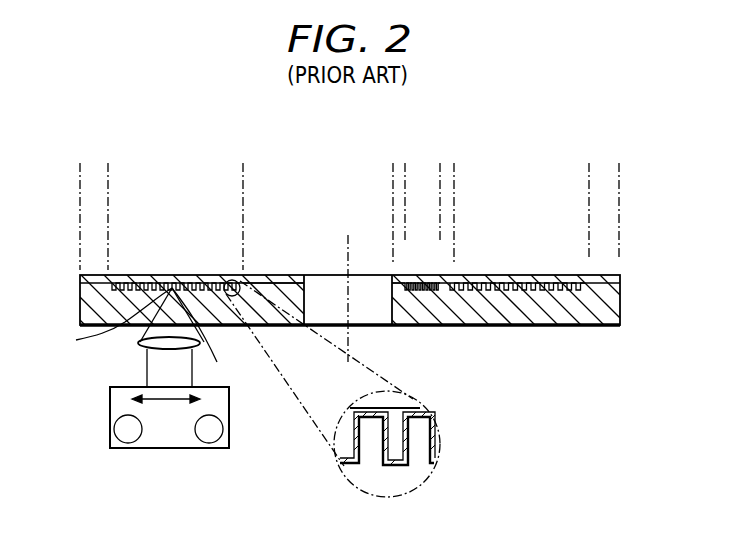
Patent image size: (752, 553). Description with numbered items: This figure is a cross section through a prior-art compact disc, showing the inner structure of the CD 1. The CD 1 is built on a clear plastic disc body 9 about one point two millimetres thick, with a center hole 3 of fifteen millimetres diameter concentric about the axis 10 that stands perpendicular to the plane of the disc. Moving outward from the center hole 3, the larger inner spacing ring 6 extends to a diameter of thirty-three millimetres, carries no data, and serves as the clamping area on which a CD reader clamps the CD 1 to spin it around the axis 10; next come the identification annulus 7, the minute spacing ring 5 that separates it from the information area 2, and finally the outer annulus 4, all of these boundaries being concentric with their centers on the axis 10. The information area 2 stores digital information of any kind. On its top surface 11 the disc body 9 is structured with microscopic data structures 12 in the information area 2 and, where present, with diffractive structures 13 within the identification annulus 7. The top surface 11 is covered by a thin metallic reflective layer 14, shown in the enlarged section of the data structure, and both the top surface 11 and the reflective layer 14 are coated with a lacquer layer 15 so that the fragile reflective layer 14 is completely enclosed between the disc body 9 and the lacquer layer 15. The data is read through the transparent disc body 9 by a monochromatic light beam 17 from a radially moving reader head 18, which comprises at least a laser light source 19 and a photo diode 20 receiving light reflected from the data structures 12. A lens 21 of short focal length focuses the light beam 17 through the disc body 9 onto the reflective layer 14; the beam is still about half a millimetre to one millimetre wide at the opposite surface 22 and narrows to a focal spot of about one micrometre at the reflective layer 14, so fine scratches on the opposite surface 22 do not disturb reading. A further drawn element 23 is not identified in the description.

The CD 1 is at (80, 302).
The information area 2 is at (243, 270).
The center hole 3 is at (370, 312).
The outer annulus 4 is at (92, 275).
The spacing ring 5 is at (440, 318).
The inner spacing ring 6 is at (400, 283).
The identification annulus 7 is at (438, 265).
The disc body 9 is at (283, 312).
The axis 10 is at (348, 250).
The top surface 11 is at (590, 275).
The data structures 12 is at (200, 314).
The diffractive structures 13 is at (428, 283).
The reflective layer 14 is at (432, 444).
The lacquer layer 15 is at (268, 280).
The light beam 17 is at (180, 372).
The reader head 18 is at (229, 405).
The laser light source 19 is at (125, 444).
The photo diode 20 is at (206, 444).
The lens 21 is at (137, 344).
The opposite surface 22 is at (590, 326).
The light beam 23 is at (109, 322).